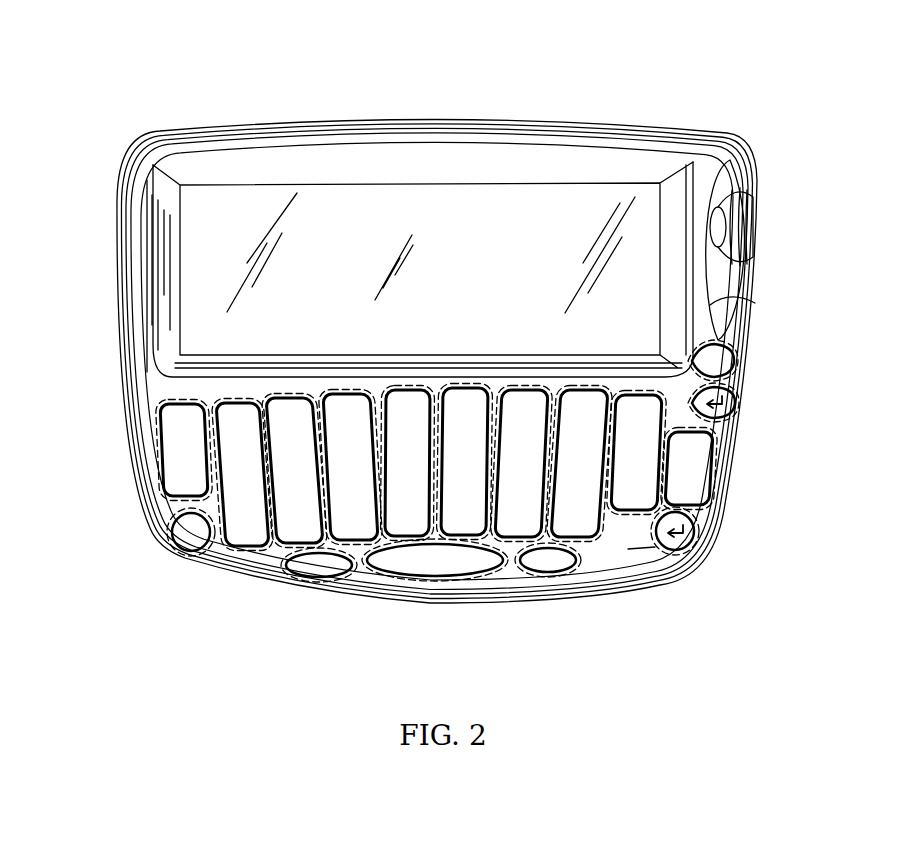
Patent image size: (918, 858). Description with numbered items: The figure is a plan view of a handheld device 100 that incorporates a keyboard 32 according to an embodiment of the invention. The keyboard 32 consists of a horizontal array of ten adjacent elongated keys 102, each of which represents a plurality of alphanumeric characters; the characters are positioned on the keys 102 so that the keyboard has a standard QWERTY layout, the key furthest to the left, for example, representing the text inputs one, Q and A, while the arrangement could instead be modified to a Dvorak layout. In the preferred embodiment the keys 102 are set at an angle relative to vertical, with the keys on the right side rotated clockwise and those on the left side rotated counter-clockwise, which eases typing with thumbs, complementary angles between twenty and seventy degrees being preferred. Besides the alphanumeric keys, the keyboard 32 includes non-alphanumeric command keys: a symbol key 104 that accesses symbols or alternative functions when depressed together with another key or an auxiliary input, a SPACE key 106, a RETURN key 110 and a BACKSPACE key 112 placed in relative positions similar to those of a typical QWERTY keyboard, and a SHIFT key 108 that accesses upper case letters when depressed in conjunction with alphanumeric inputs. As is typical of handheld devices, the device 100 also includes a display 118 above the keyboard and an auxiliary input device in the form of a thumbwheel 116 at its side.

The handheld device 100 is at (263, 146).
The display 118 is at (205, 243).
The elongated keys 102 is at (688, 432).
The keyboard 32 is at (148, 415).
The thumbwheel 116 is at (748, 252).
The BACKSPACE key 112 is at (731, 433).
The symbol key 104 is at (187, 528).
The SPACE key 106 is at (423, 577).
The SHIFT key 108 is at (551, 569).
The RETURN key 110 is at (667, 540).